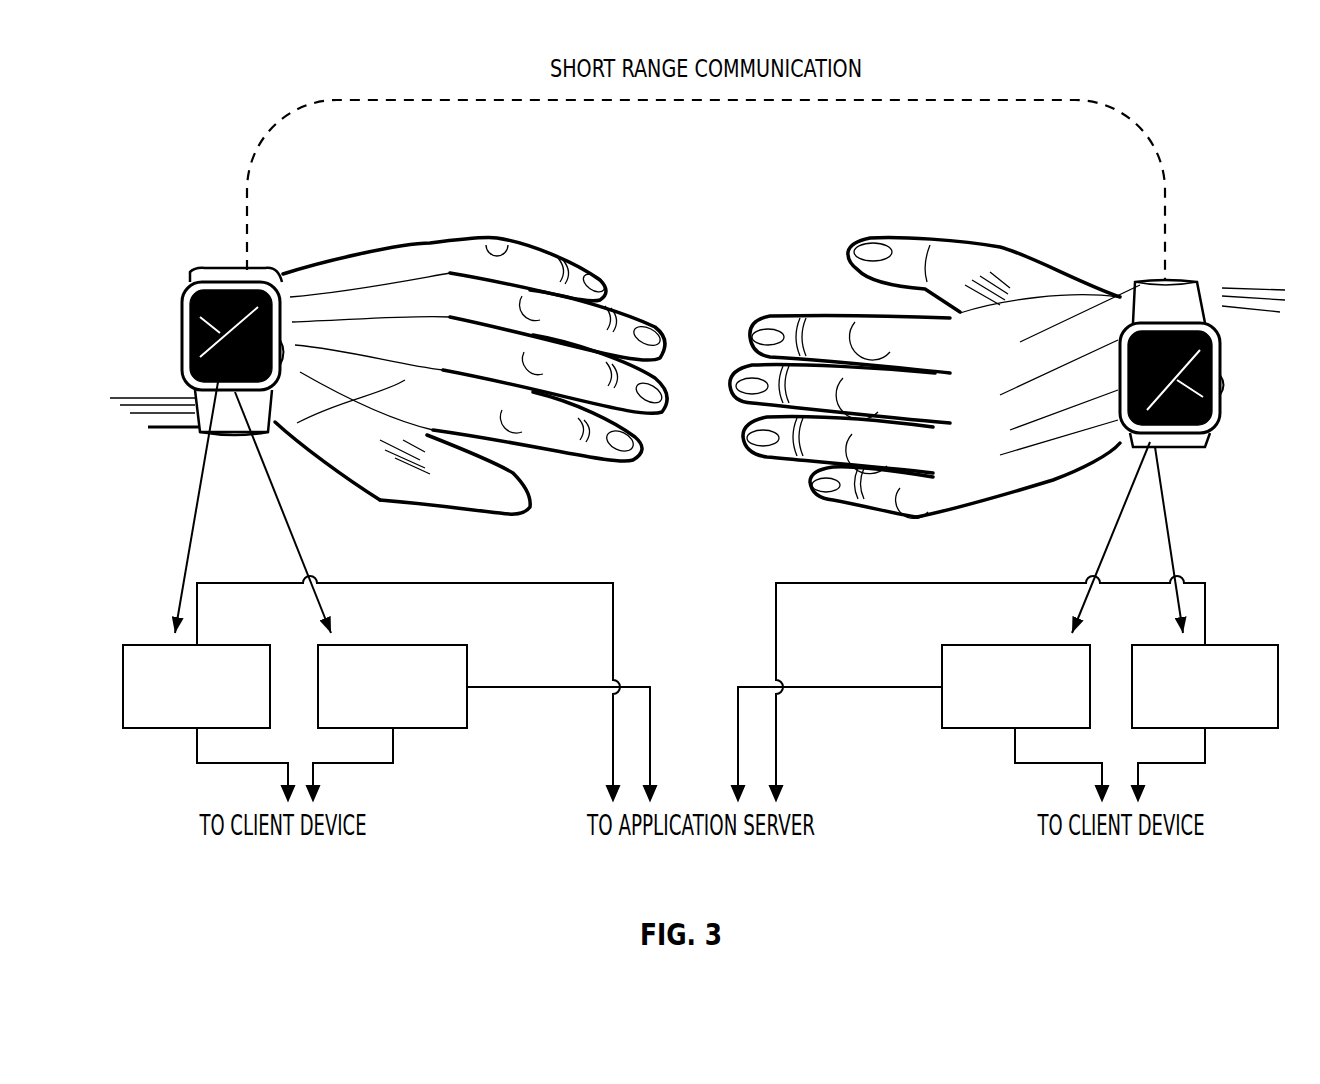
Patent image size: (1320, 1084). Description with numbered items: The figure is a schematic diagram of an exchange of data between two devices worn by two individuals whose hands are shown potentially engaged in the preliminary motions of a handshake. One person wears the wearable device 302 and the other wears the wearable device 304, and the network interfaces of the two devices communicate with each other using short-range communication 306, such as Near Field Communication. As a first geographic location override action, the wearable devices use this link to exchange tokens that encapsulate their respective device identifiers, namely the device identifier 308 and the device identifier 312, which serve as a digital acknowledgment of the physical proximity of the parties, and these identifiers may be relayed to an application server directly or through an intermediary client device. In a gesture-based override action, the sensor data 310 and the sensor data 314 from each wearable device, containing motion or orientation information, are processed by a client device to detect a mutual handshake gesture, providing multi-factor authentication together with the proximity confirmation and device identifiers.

The wearable device 302 is at (225, 272).
The wearable device 304 is at (1187, 280).
The short-range communication 306 is at (1130, 125).
The device identifier 308 is at (150, 730).
The sensor data 310 is at (433, 730).
The device identifier 312 is at (967, 730).
The sensor data 314 is at (1248, 730).